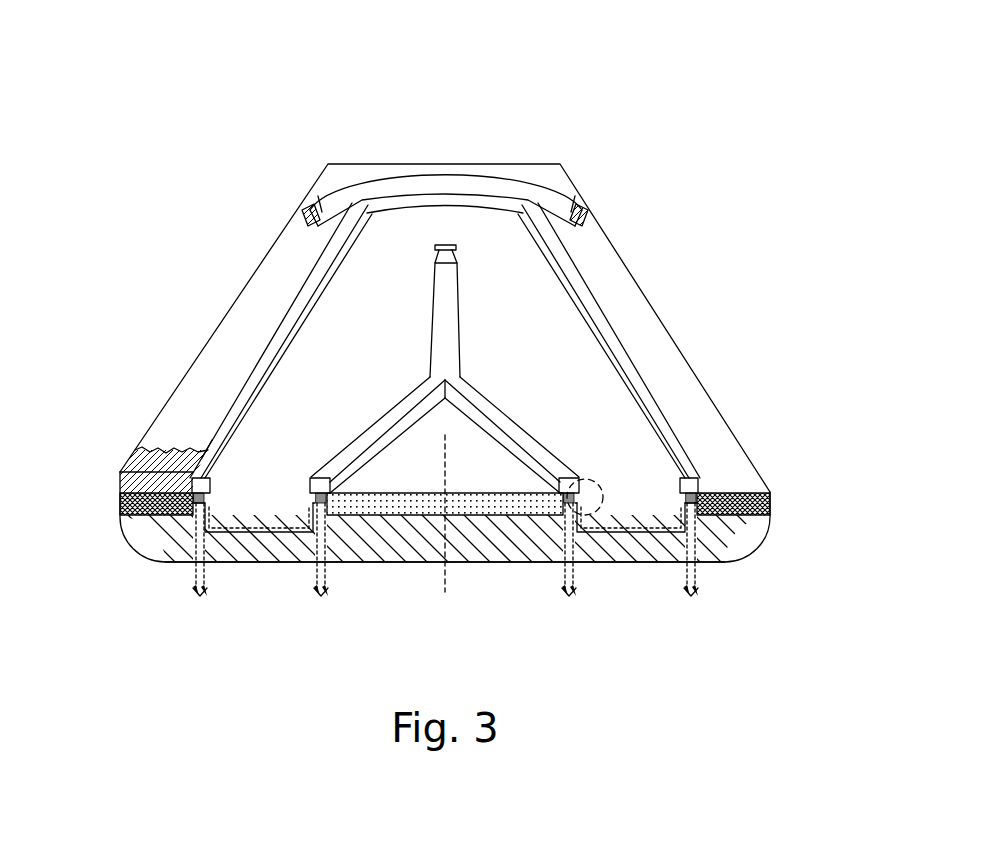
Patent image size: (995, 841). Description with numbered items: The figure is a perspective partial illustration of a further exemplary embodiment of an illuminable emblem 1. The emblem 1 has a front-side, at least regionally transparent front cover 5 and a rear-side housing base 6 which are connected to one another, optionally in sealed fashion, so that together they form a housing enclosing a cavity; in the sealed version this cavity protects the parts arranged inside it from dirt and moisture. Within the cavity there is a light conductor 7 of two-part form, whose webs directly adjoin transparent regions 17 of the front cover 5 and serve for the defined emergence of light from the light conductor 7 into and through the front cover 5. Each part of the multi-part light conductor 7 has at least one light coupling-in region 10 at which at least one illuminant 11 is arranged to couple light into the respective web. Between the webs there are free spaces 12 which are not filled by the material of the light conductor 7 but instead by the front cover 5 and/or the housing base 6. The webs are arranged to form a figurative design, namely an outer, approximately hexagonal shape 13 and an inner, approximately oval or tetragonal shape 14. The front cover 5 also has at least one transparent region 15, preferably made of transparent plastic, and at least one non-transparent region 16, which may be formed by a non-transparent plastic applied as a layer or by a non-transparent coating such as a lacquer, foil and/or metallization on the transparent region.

The emblem 1 is at (650, 111).
The front cover 5 is at (147, 542).
The housing base 6 is at (140, 456).
The light conductor 7 is at (443, 178).
The light coupling-in region 10 is at (543, 193).
The illuminant 11 is at (590, 210).
The free space 12 is at (323, 397).
The outer, approximately hexagonal shape 13 is at (216, 440).
The inner, approximately oval or tetragonal shape 14 is at (403, 397).
The transparent region 15 is at (183, 563).
The non-transparent region 16 is at (120, 501).
The transparent region 17 is at (180, 561).